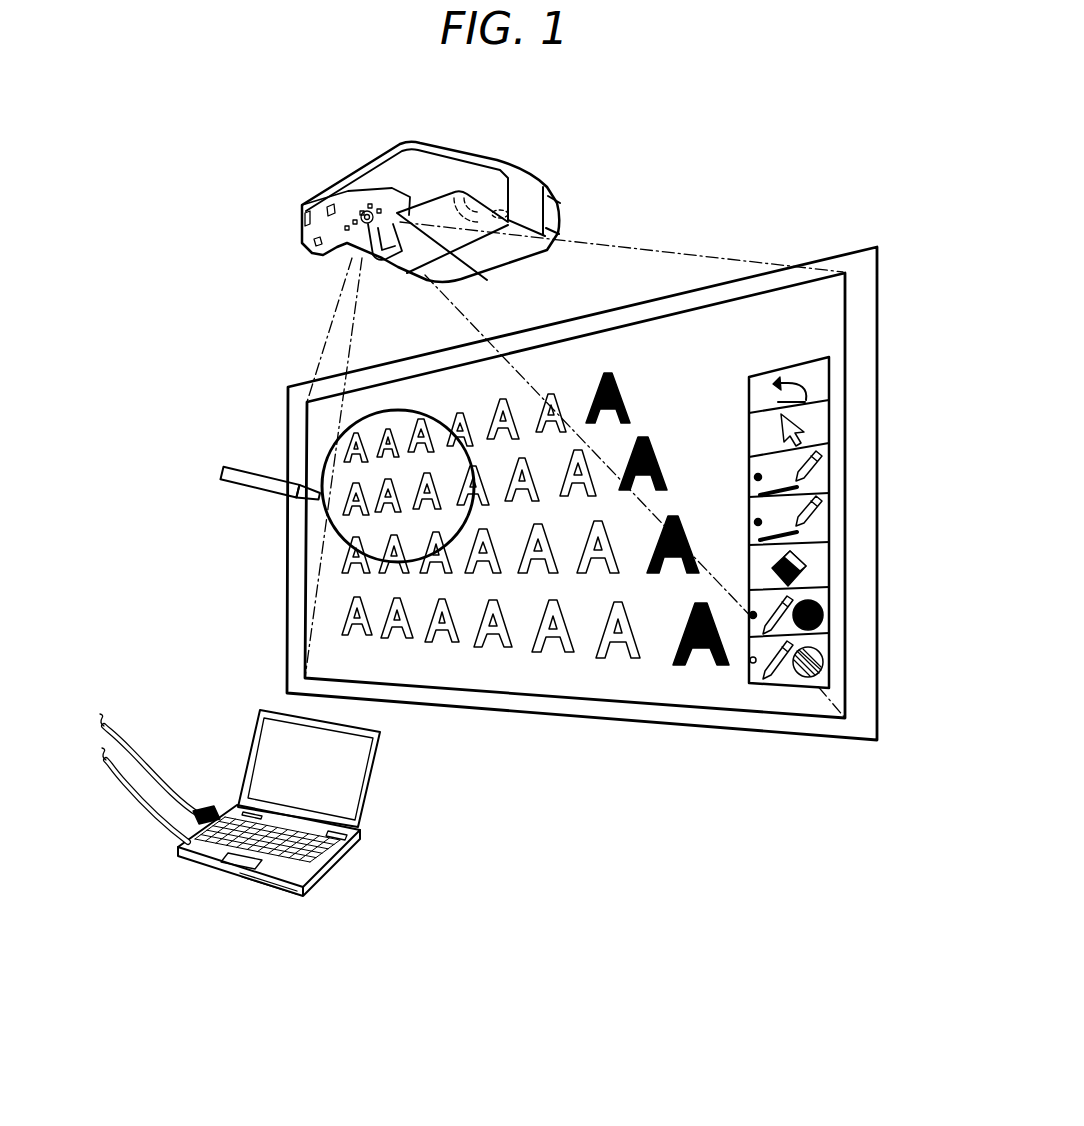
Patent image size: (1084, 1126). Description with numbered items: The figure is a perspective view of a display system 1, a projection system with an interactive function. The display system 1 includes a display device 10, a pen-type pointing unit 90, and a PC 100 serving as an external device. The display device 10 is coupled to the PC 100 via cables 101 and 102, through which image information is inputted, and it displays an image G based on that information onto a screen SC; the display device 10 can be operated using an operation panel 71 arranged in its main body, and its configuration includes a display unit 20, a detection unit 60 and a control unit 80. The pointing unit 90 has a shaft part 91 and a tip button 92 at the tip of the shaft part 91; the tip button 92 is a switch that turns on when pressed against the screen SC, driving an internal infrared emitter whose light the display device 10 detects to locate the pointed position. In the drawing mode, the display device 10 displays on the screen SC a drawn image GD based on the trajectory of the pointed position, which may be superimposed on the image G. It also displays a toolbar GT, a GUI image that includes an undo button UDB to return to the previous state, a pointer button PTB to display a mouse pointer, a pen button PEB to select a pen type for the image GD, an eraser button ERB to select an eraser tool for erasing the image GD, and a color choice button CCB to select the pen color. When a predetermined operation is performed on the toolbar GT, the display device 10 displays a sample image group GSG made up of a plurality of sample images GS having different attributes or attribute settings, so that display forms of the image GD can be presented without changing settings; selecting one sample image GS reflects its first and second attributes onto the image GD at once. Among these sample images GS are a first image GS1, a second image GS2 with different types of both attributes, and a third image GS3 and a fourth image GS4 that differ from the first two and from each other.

The display system 1 is at (120, 147).
The display device 10 is at (454, 180).
The display unit 20 is at (483, 183).
The detection unit 60 is at (505, 197).
The control unit 80 is at (518, 218).
The operation panel 71 is at (394, 188).
The screen SC is at (290, 384).
The image G is at (573, 710).
The sample image GS is at (618, 380).
The sample image group GSG is at (670, 404).
The first image GS1 is at (350, 624).
The second image GS2 is at (395, 530).
The third image GS3 is at (388, 637).
The fourth image GS4 is at (352, 572).
The image GD is at (451, 541).
The toolbar GT is at (852, 512).
The undo button UDB is at (833, 380).
The pointer button PTB is at (831, 423).
The pen button PEB is at (829, 522).
The eraser button ERB is at (829, 570).
The color choice button CCB is at (829, 660).
The pointing unit 90 is at (233, 435).
The shaft part 91 is at (228, 486).
The tip button 92 is at (316, 491).
The PC 100 is at (328, 870).
The cable 101 is at (138, 763).
The cable 102 is at (130, 798).